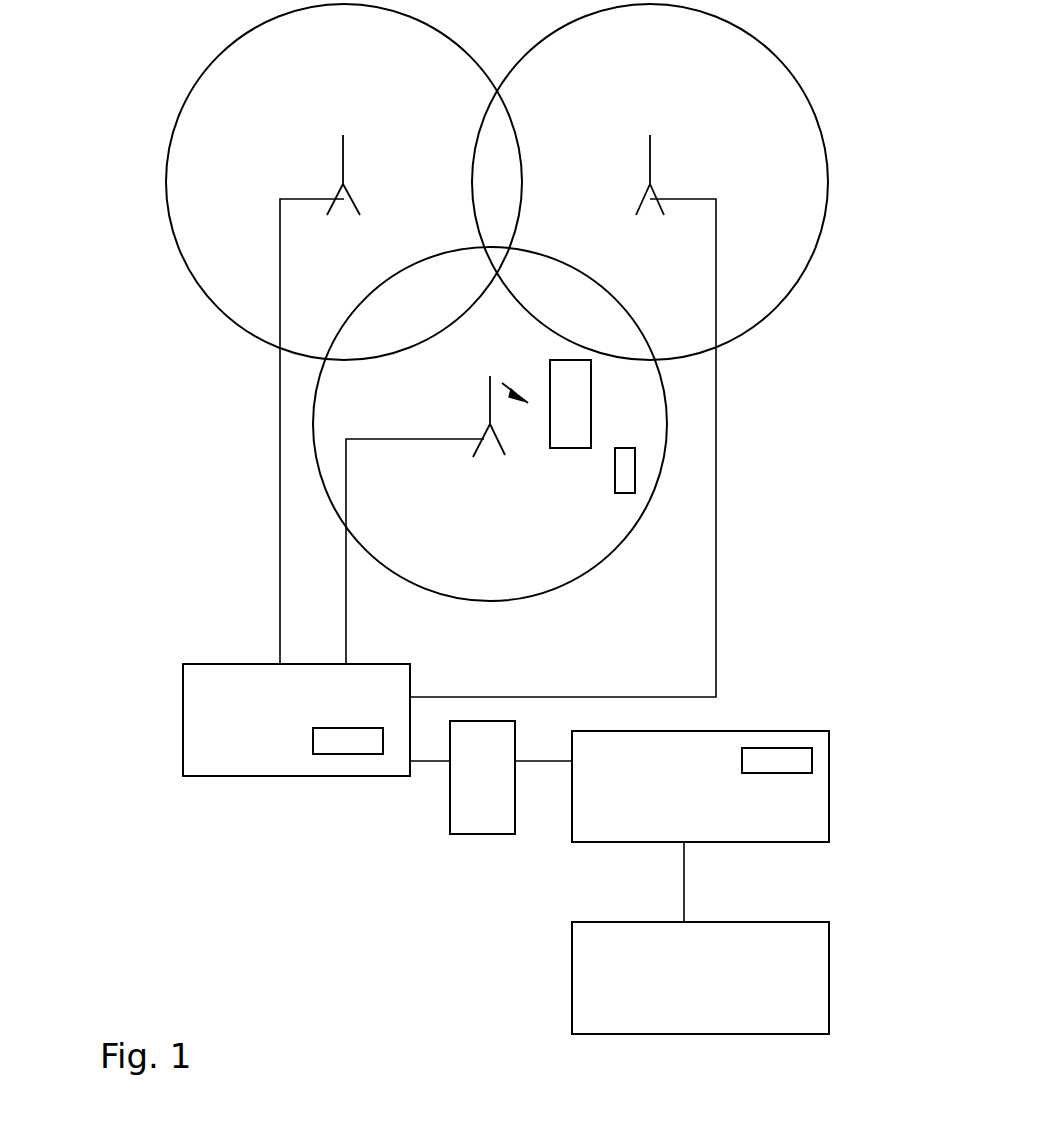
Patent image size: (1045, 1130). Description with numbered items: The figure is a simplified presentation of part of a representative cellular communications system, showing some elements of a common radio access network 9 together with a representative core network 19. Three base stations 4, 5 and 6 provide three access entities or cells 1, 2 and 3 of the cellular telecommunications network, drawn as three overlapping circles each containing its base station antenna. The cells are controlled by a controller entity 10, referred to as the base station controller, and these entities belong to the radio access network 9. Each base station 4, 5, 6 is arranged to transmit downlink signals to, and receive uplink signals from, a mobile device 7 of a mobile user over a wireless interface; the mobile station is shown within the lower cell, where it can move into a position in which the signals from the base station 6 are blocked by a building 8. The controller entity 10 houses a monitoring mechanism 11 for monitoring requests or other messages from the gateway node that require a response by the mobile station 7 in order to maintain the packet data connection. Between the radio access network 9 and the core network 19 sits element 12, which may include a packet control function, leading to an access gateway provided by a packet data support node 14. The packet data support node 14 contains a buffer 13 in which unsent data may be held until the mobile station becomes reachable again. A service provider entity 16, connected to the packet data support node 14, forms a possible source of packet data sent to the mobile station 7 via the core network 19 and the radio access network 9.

The cell 1 is at (230, 130).
The cell 2 is at (722, 145).
The cell 3 is at (363, 419).
The base station 4 is at (343, 172).
The base station 5 is at (658, 180).
The base station 6 is at (473, 457).
The mobile device 7 is at (637, 459).
The building 8 is at (571, 401).
The radio access network 9 is at (837, 88).
The controller entity 10 is at (282, 720).
The monitoring mechanism 11 is at (332, 747).
The packet control function element 12 is at (478, 806).
The buffer 13 is at (782, 763).
The packet data support node 14 is at (727, 803).
The service provider entity 16 is at (777, 982).
The core network 19 is at (838, 671).